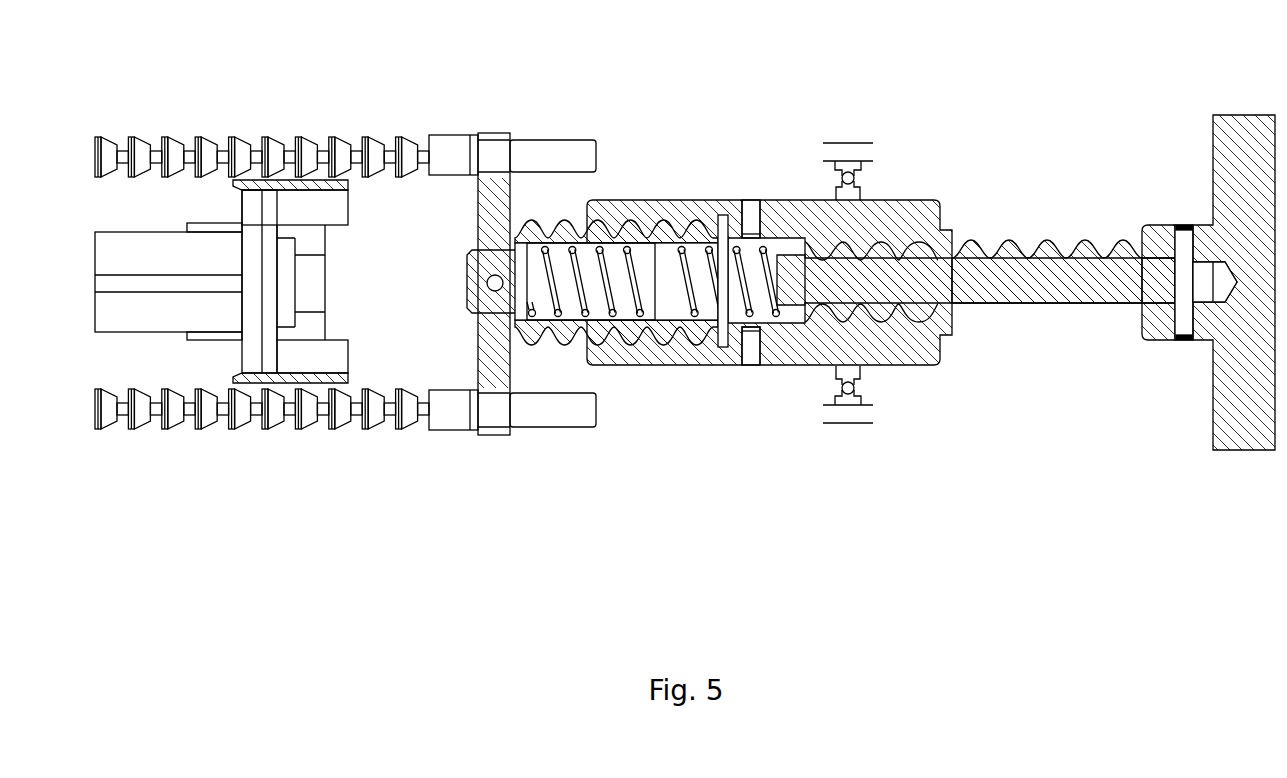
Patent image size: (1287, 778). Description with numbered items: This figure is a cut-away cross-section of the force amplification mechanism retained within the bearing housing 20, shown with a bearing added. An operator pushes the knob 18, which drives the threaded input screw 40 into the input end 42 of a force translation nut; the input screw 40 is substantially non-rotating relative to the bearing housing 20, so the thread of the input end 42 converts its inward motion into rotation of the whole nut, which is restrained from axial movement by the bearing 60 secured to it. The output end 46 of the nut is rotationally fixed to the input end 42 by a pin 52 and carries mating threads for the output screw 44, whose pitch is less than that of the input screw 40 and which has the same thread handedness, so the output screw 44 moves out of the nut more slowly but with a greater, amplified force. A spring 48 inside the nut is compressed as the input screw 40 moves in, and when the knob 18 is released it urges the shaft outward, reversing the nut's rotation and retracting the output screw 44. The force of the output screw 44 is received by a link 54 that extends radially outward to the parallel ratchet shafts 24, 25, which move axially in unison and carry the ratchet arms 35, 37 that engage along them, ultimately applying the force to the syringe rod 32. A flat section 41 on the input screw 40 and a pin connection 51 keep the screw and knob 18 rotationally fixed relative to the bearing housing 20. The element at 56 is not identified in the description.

The knob 18 is at (1236, 403).
The bearing housing 20 is at (823, 406).
The ratchet shaft 24 is at (222, 415).
The ratchet shaft 25 is at (141, 160).
The syringe rod 32 is at (186, 267).
The ratchet arm 35 is at (322, 183).
The ratchet arm 37 is at (320, 385).
The input screw 40 is at (993, 283).
The input screw flat section 41 is at (1078, 300).
The input end 42 is at (864, 224).
The output screw 44 is at (570, 232).
The output end 46 is at (656, 348).
The spring 48 is at (685, 280).
The pin connection 51 is at (1175, 350).
The pin 52 is at (754, 215).
The link 54 is at (503, 283).
The plate 56 is at (498, 195).
The bearing 60 is at (872, 386).